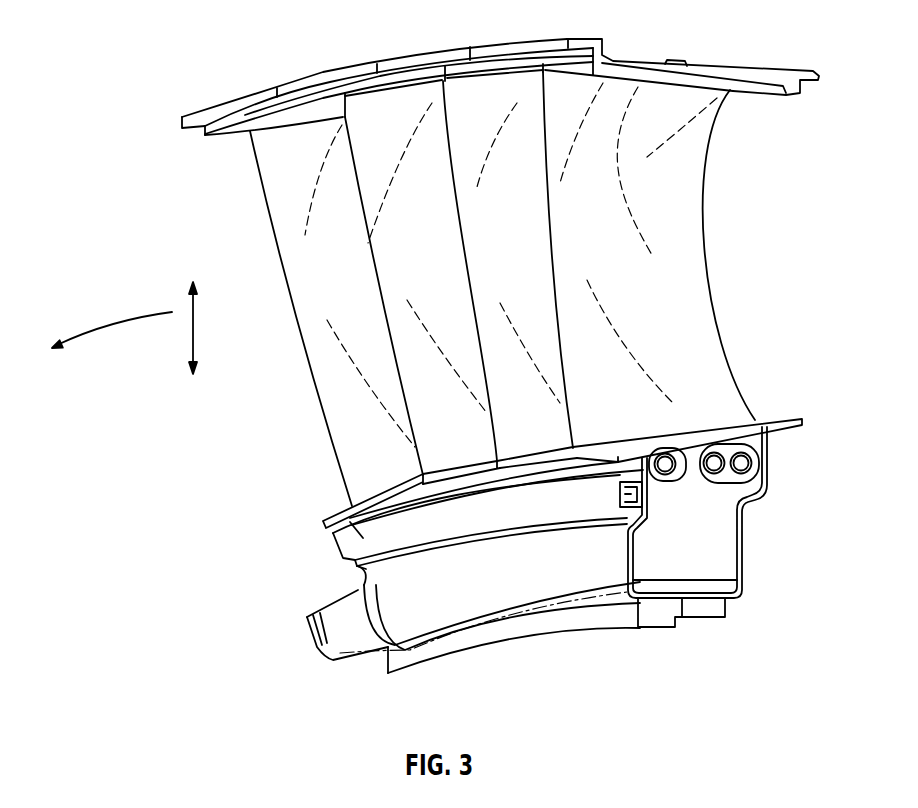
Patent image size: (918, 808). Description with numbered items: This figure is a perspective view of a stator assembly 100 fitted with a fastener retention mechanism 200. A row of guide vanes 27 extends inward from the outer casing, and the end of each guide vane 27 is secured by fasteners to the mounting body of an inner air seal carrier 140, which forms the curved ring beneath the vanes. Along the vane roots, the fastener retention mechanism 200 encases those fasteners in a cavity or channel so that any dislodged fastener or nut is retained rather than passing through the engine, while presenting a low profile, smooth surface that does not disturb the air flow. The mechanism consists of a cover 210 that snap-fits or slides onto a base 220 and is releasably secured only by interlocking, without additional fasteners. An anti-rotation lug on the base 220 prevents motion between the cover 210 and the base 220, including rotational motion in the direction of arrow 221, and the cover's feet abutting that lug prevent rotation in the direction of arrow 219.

The stator assembly 100 is at (140, 94).
The guide vane 27 is at (680, 272).
The inner air seal carrier 140 is at (413, 597).
The fastener retention mechanism 200 is at (330, 549).
The cover 210 is at (340, 512).
The arrow 219 is at (194, 326).
The base 220 is at (636, 498).
The arrow 221 is at (120, 320).